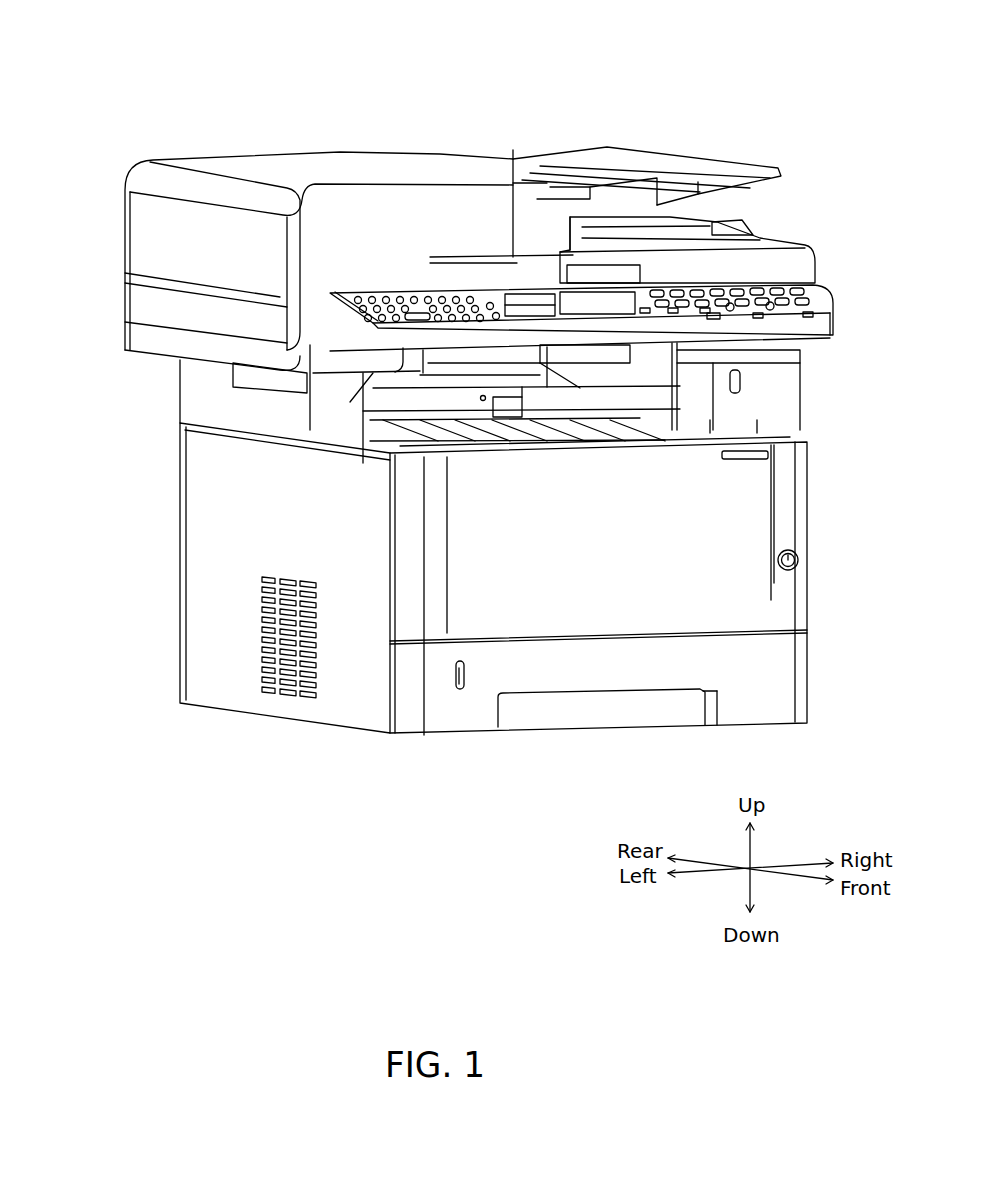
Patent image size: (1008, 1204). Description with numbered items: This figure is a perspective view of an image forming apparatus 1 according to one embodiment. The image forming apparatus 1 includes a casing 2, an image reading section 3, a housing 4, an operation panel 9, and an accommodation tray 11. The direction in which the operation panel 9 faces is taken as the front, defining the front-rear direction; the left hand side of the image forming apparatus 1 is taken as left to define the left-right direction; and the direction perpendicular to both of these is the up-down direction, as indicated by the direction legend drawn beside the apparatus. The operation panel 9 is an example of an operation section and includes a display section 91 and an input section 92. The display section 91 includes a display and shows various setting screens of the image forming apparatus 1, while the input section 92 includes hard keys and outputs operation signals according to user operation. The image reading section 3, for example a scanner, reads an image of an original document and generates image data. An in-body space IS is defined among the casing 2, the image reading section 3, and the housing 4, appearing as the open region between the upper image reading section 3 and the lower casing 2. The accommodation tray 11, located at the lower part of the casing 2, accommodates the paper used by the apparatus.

The image forming apparatus 1 is at (700, 117).
The casing 2 is at (93, 431).
The image reading section 3 is at (93, 160).
The housing 4 is at (93, 330).
The operation panel 9 is at (830, 284).
The display section 91 is at (568, 302).
The input section 92 is at (430, 302).
The accommodation tray 11 is at (780, 673).
The in-body space IS is at (604, 407).